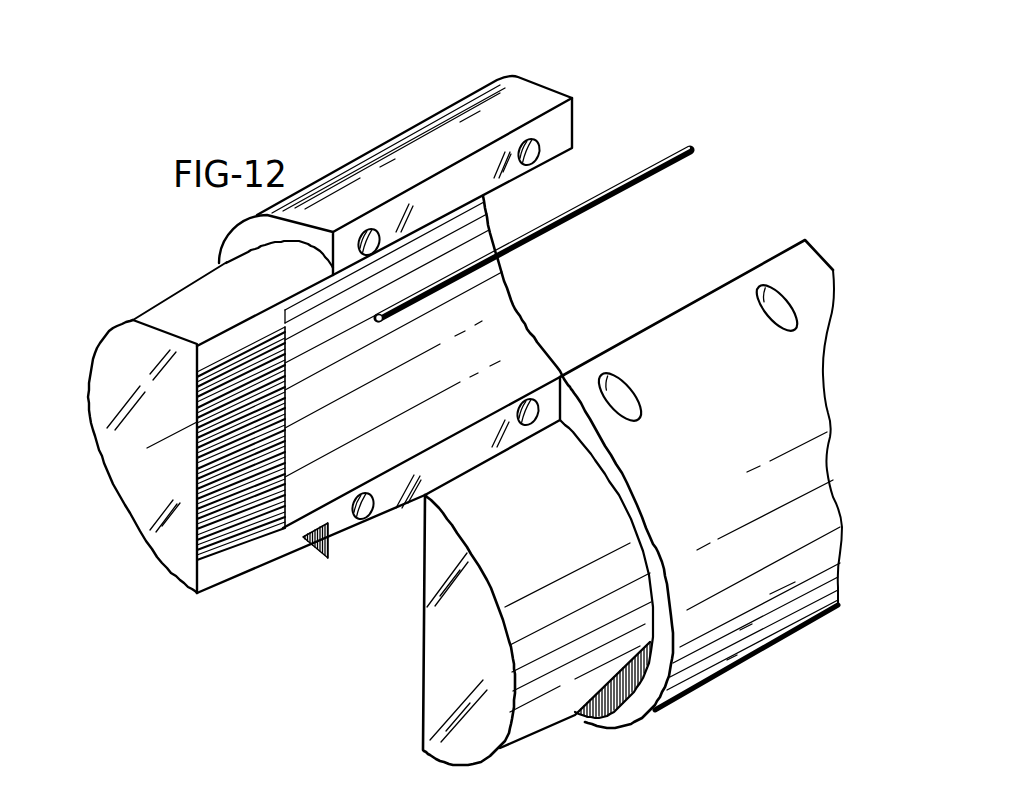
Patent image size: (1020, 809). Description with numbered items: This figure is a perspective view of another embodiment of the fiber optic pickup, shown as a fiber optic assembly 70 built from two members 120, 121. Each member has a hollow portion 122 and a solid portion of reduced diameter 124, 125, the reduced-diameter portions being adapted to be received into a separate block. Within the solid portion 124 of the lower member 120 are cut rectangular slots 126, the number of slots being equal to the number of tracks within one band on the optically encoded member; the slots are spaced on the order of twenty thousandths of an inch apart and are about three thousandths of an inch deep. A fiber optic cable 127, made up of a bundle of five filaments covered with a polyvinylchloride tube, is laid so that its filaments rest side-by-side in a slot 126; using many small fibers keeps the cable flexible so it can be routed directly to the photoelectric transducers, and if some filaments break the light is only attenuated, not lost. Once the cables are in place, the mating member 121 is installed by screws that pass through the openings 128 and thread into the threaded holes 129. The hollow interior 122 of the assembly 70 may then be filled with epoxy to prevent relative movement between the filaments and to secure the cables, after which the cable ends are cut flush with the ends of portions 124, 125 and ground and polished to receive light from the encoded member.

The fiber optic assembly 70 is at (382, 128).
The member 120 is at (187, 290).
The mating member 121 is at (695, 699).
The hollow portion 122 is at (531, 338).
The solid portion of reduced diameter 124 is at (248, 558).
The solid portion of reduced diameter 125 is at (518, 722).
The rectangular slots 126 is at (200, 527).
The fiber optic cable 127 is at (605, 200).
The openings 128 is at (768, 317).
The threaded holes 129 is at (366, 230).